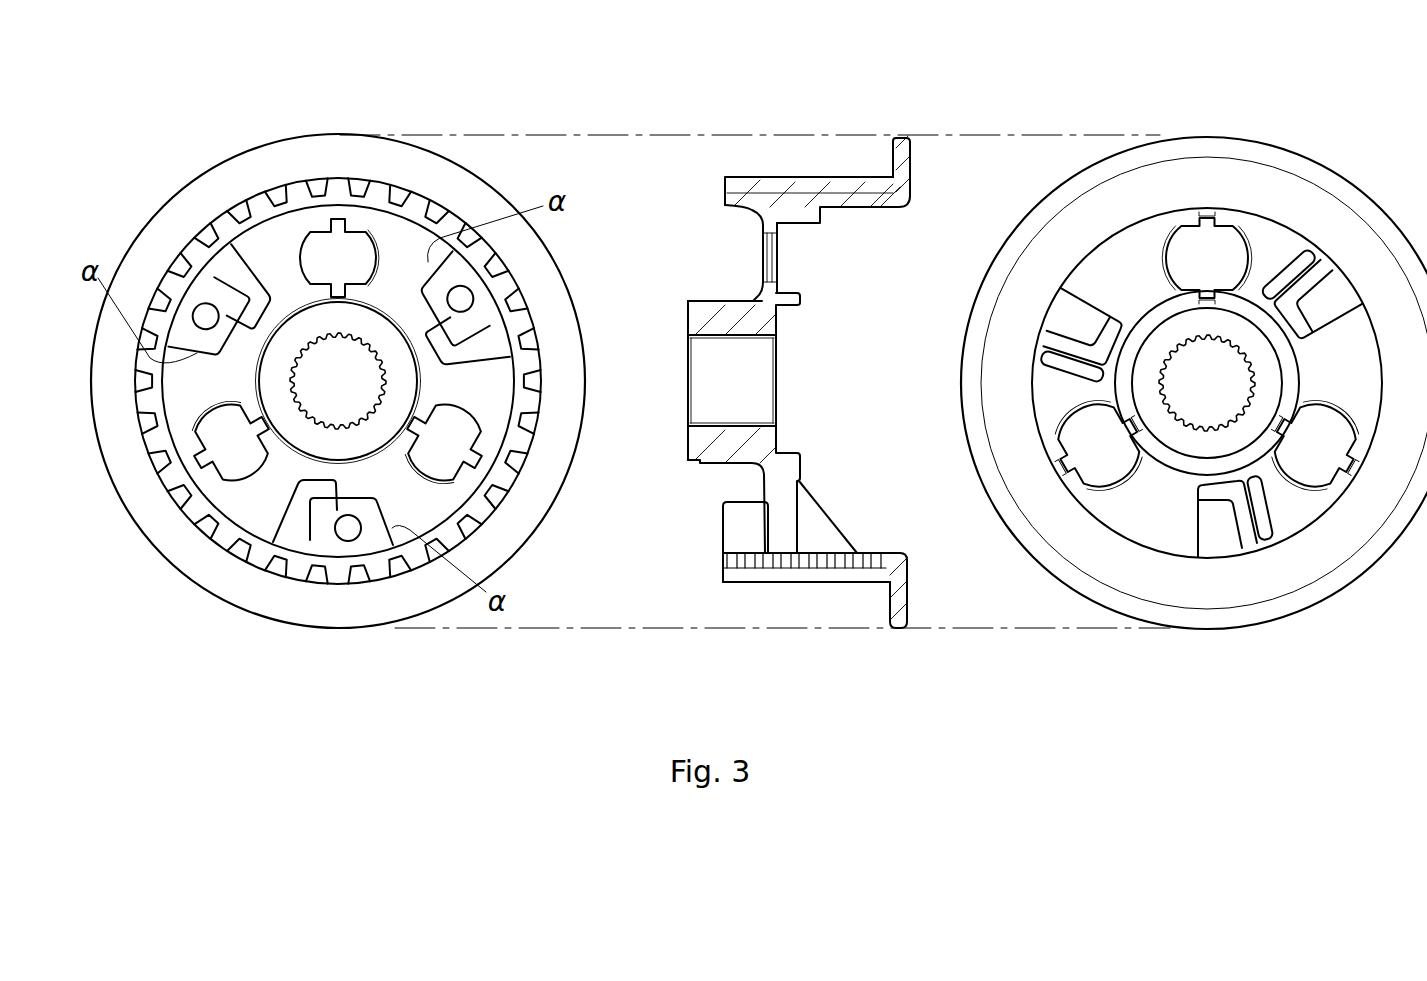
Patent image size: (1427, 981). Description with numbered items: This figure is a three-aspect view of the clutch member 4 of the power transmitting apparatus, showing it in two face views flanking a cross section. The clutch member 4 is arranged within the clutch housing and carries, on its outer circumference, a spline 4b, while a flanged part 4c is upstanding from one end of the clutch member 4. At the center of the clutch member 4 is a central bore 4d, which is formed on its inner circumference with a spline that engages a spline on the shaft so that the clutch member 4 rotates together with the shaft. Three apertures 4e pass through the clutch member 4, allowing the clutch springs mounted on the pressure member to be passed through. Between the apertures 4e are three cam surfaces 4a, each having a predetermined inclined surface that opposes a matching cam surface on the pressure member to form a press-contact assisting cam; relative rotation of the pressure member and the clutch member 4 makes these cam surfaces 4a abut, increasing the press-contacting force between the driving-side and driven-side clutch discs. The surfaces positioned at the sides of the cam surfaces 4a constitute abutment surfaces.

The clutch member 4 is at (495, 176).
The cam surface 4a is at (212, 288).
The spline 4b is at (220, 216).
The flanged part 4c is at (250, 150).
The central bore 4d is at (365, 360).
The apertures 4e is at (334, 243).